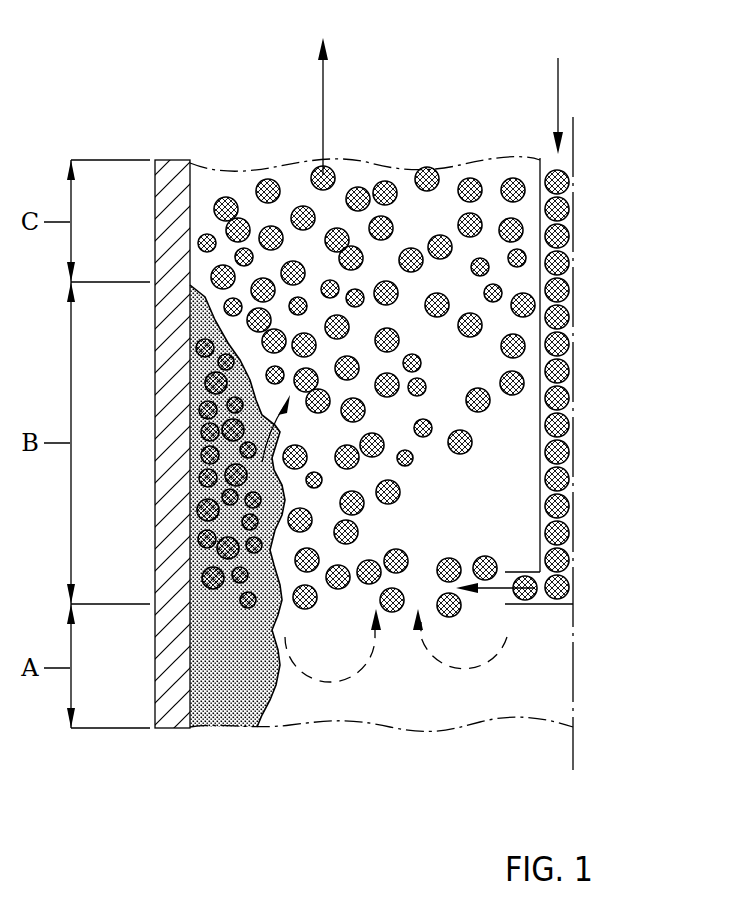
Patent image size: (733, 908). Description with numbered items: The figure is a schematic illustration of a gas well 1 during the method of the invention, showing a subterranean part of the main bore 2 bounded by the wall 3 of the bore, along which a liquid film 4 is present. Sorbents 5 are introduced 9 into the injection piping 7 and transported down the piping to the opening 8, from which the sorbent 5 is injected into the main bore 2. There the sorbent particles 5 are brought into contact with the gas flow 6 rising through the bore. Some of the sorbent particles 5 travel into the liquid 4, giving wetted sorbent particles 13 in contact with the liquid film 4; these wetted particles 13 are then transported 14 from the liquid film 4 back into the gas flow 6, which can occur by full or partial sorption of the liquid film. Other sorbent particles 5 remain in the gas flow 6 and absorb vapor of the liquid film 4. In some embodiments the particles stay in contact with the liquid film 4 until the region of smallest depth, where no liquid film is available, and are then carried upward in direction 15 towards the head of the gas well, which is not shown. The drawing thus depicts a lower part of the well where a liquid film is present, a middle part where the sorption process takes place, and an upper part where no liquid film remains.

The gas well 1 is at (190, 95).
The main bore 2 is at (447, 210).
The wall 3 is at (173, 663).
The liquid film 4 is at (230, 692).
The sorbents 5 is at (385, 193).
The gas flow 6 is at (330, 683).
The injection piping 7 is at (568, 383).
The opening 8 is at (493, 590).
The introduction of sorbents 9 is at (556, 97).
The sorbent particles in contact with liquid 13 is at (208, 508).
The transport 14 is at (283, 437).
The direction 15 is at (322, 97).